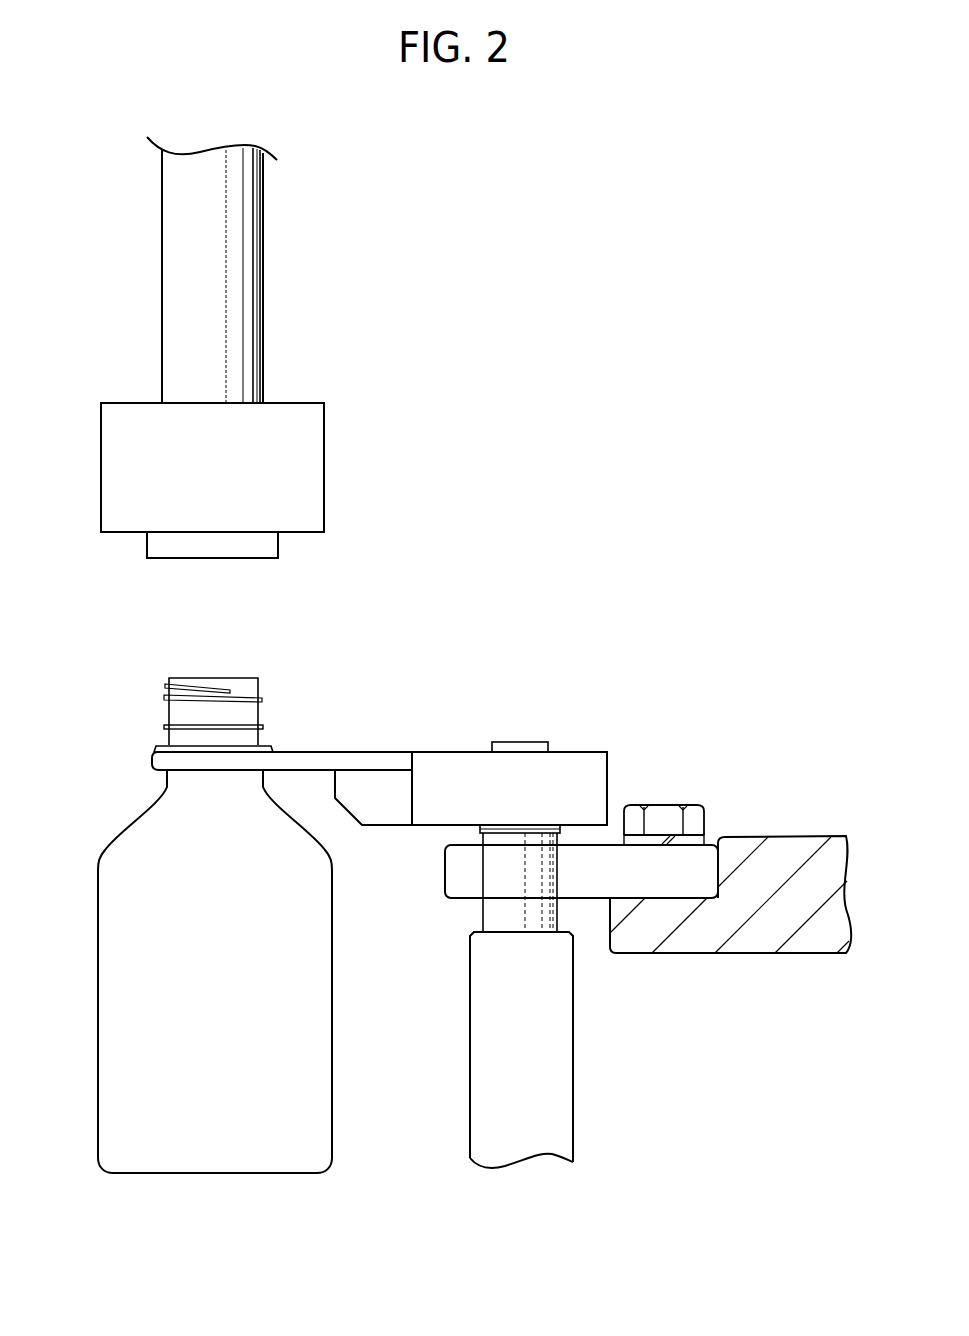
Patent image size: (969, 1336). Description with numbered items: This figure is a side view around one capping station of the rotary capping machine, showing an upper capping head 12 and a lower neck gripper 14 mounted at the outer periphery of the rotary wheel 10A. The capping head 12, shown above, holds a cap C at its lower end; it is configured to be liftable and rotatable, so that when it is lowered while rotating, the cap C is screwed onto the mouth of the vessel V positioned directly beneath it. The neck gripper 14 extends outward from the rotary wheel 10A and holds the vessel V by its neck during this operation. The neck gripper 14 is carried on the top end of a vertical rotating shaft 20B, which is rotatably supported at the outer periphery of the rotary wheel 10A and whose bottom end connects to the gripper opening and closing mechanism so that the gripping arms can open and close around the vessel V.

The capping head 12 is at (326, 475).
The cap C is at (150, 548).
The neck gripper 14 is at (447, 753).
The rotary wheel 10A is at (777, 845).
The rotating shaft 20B is at (490, 915).
The vessel V is at (98, 880).